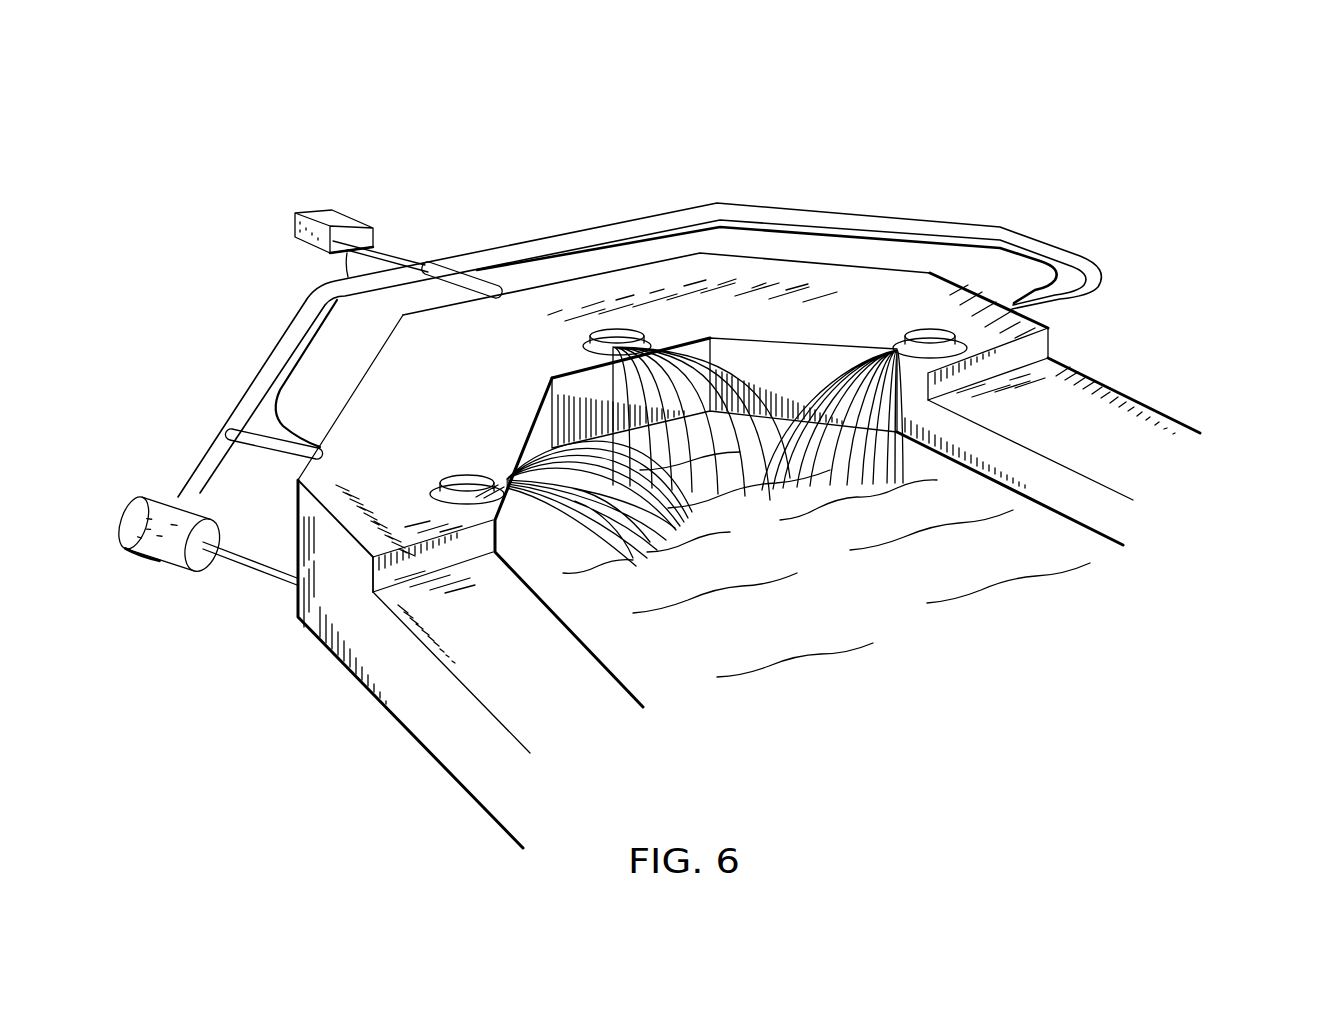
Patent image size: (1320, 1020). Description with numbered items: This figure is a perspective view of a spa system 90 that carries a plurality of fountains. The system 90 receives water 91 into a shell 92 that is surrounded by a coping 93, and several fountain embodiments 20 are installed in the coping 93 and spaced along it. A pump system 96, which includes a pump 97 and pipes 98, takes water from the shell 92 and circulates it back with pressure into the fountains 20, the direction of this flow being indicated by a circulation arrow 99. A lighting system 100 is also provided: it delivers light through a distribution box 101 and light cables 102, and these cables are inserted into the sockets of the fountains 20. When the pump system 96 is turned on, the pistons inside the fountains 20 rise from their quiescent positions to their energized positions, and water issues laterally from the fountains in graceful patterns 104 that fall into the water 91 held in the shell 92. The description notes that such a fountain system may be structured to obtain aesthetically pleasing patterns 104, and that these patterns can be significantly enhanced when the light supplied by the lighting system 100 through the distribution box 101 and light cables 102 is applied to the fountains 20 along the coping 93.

The fountain embodiments 20 is at (931, 333).
The system 90 is at (1150, 298).
The water 91 is at (811, 562).
The shell 92 is at (1032, 475).
The coping 93 is at (1122, 413).
The pump system 96 is at (205, 335).
The pump 97 is at (137, 518).
The pipes 98 is at (580, 235).
The circulation arrow 99 is at (277, 542).
The lighting system 100 is at (258, 219).
The distribution box 101 is at (330, 215).
The light cables 102 is at (395, 247).
The patterns 104 is at (803, 392).